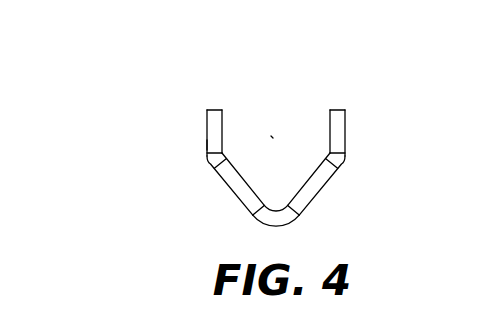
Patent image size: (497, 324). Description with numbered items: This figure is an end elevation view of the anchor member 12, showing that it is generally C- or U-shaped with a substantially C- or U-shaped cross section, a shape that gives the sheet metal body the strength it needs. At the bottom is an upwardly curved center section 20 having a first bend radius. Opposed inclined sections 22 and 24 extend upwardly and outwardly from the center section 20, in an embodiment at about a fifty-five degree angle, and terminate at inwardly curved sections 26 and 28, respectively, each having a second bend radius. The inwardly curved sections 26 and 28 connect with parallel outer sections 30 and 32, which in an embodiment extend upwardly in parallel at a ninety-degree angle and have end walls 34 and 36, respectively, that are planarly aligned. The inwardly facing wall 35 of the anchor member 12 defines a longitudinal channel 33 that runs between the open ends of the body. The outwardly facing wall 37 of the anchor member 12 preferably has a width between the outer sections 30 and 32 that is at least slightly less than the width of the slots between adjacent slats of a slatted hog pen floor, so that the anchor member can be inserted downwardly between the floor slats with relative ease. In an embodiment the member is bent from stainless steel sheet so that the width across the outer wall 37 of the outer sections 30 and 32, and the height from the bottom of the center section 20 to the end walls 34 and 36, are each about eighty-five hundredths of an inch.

The anchor member 12 is at (216, 76).
The curved center section 20 is at (282, 218).
The inclined section 22 is at (243, 194).
The inclined section 24 is at (312, 193).
The inwardly curved section 26 is at (225, 157).
The inwardly curved section 28 is at (326, 158).
The outer section 30 is at (212, 131).
The outer section 32 is at (336, 130).
The longitudinal channel 33 is at (272, 137).
The end wall 34 is at (216, 108).
The inwardly facing wall 35 is at (313, 176).
The end wall 36 is at (336, 108).
The outwardly facing wall 37 is at (207, 145).